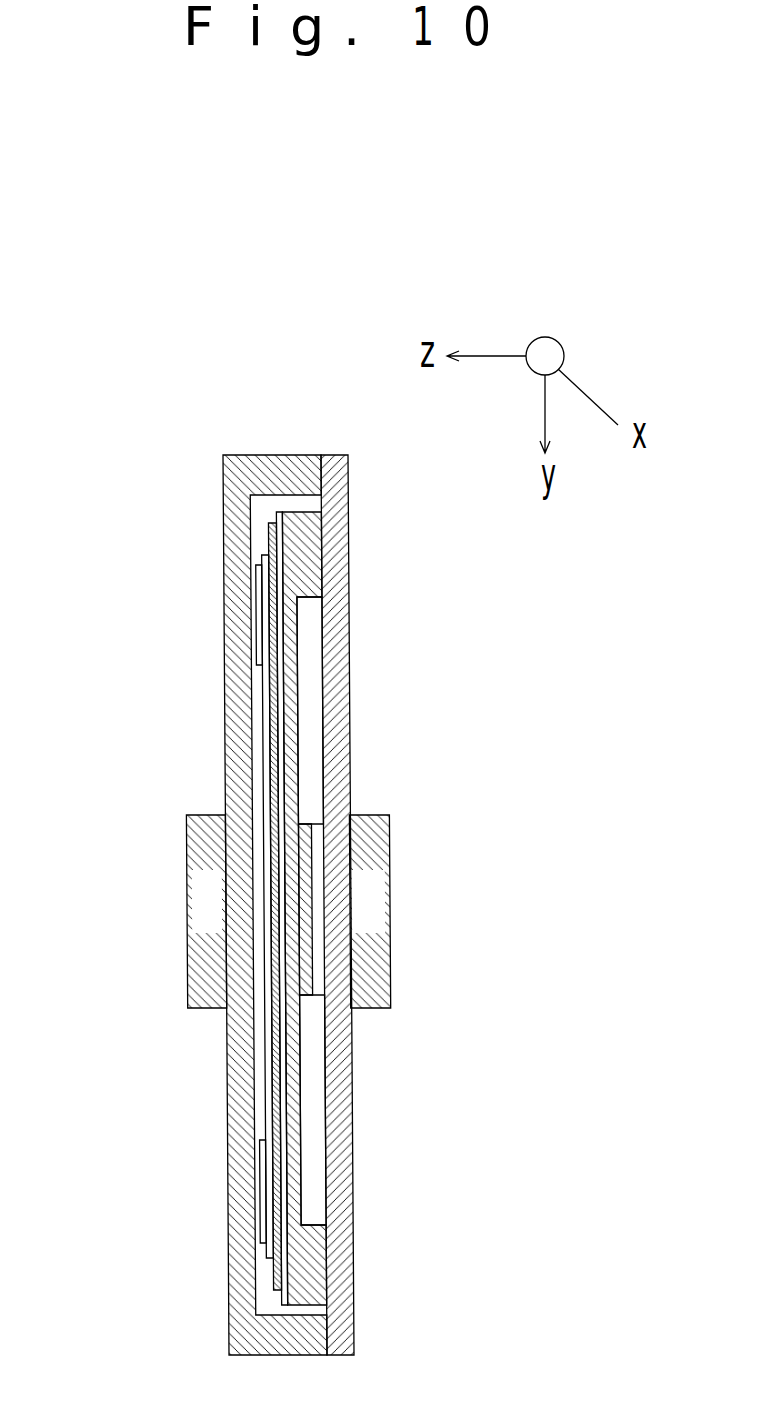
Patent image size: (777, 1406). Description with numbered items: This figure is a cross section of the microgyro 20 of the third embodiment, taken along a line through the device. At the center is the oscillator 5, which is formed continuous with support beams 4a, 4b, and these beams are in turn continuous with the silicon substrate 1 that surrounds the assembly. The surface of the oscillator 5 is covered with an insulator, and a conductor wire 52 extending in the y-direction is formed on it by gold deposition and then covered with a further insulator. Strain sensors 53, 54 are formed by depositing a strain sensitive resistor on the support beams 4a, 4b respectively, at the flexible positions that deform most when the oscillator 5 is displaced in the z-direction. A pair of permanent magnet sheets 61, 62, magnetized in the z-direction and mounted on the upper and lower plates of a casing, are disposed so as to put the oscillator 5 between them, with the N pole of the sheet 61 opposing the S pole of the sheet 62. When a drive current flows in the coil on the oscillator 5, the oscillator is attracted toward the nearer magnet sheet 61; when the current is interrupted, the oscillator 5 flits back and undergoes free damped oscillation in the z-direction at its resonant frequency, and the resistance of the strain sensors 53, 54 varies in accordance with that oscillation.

The microgyro 20 is at (202, 877).
The silicon substrate 1 is at (345, 883).
The conductor wire 52 is at (192, 906).
The strain sensor 53 is at (182, 598).
The strain sensor 54 is at (186, 1167).
The oscillator 5 is at (389, 909).
The support beam 4a is at (372, 710).
The support beam 4b is at (376, 1110).
The permanent magnet sheet 61 is at (165, 908).
The permanent magnet sheet 62 is at (412, 895).